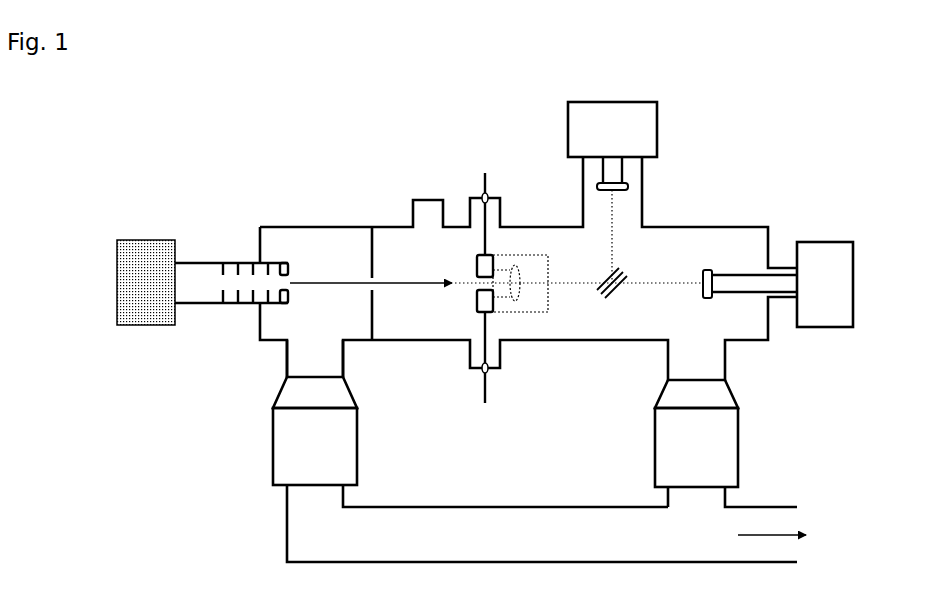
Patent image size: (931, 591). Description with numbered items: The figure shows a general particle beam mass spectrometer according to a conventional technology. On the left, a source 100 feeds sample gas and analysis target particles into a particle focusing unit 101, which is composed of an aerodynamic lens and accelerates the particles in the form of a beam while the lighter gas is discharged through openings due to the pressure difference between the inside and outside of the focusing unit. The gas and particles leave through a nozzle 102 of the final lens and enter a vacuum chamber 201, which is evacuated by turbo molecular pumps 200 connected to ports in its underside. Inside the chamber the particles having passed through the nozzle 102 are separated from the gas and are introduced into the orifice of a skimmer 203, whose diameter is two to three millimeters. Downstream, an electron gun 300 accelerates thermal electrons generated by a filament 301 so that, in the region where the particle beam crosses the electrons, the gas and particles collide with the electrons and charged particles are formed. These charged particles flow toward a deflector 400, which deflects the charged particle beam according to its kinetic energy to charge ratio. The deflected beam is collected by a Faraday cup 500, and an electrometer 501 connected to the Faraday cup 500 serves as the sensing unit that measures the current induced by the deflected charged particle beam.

The light source 100 is at (116, 283).
The particle focusing unit 101 is at (233, 260).
The nozzle 102 is at (292, 281).
The turbo molecular pump 200 is at (271, 433).
The vacuum chamber 201 is at (280, 343).
The skimmer 203 is at (383, 302).
The electron gun 300 is at (527, 322).
The filament 301 is at (481, 173).
The deflector 400 is at (607, 310).
The Faraday cup 500 is at (630, 184).
The electrometer 501 is at (660, 130).